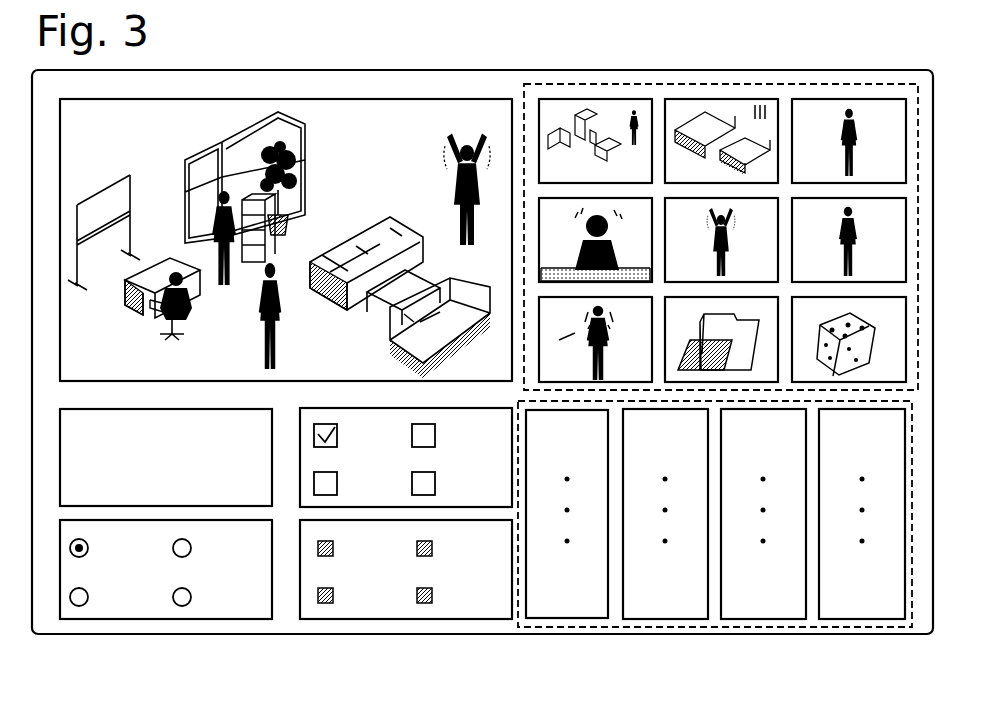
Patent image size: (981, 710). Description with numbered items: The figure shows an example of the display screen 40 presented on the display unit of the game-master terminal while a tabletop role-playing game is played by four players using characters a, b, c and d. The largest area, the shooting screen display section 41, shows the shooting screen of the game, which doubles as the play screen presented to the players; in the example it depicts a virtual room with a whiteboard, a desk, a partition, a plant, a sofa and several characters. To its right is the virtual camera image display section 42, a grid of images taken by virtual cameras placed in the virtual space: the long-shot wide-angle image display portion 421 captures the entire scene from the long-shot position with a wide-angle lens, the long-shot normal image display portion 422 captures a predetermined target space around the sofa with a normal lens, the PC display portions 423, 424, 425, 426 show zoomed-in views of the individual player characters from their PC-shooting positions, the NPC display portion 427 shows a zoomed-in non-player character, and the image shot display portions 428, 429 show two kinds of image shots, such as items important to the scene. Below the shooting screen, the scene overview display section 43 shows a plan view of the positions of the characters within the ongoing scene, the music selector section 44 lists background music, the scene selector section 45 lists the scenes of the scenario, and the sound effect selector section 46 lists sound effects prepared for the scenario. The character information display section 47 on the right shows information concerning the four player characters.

The display screen 40 is at (413, 70).
The shooting screen display section 41 is at (330, 98).
The virtual camera image display section 42 is at (721, 212).
The long-shot wide-angle image display portion 421 is at (571, 98).
The long-shot normal image display portion 422 is at (705, 98).
The PC display portion 423 is at (877, 98).
The PC display portion 424 is at (538, 183).
The PC display portion 425 is at (665, 183).
The PC display portion 426 is at (790, 183).
The NPC display portion 427 is at (595, 340).
The image shot display portion 428 is at (721, 340).
The image shot display portion 429 is at (849, 340).
The scene overview display section 43 is at (60, 508).
The music selector section 44 is at (300, 508).
The scene selector section 45 is at (175, 620).
The sound effect selector section 46 is at (392, 620).
The character information display section 47 is at (670, 628).